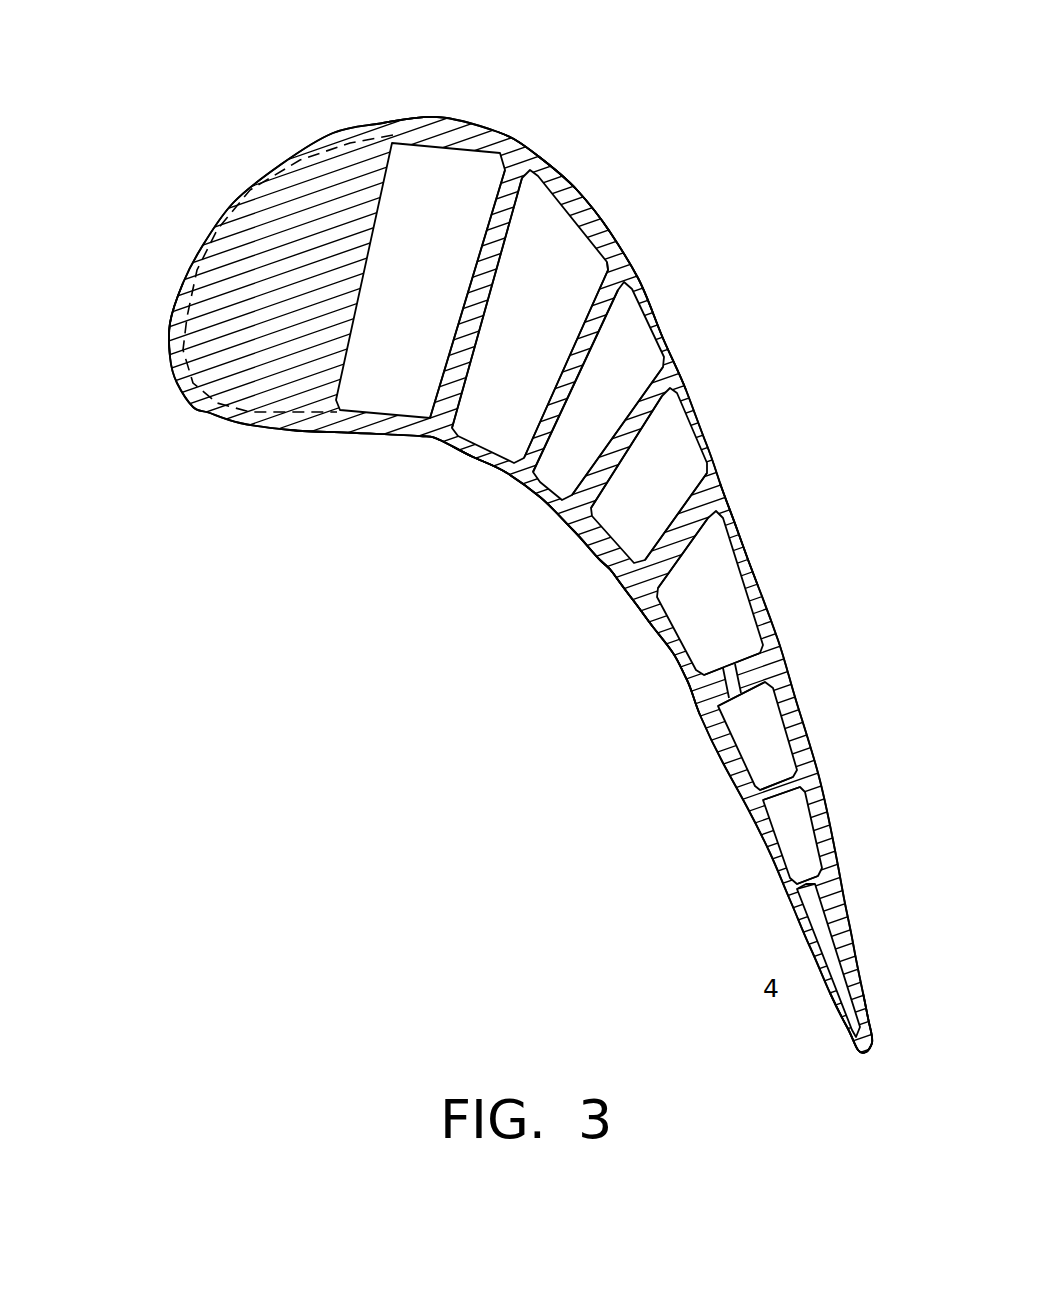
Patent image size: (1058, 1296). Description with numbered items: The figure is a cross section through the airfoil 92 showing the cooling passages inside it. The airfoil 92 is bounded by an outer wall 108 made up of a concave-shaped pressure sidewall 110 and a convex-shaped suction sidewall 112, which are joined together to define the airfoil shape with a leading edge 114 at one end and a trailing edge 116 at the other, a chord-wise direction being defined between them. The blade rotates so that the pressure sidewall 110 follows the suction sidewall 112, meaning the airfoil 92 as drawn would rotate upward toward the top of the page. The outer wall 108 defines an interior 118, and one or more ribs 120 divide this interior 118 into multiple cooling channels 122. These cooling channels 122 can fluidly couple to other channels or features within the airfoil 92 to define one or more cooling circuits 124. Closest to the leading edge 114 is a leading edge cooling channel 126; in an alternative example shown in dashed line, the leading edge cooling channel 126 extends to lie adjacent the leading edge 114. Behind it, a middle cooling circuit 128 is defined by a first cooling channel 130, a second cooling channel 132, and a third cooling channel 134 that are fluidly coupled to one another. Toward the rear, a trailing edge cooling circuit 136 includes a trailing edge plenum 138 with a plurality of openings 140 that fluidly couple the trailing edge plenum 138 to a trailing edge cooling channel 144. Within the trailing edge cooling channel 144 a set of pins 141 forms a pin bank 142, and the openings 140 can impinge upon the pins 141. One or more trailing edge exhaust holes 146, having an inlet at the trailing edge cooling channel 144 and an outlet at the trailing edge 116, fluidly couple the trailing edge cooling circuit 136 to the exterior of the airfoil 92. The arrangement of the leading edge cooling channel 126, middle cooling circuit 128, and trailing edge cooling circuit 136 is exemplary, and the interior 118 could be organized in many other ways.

The airfoil 92 is at (188, 203).
The outer wall 108 is at (437, 108).
The pressure sidewall 110 is at (527, 494).
The suction sidewall 112 is at (630, 255).
The leading edge 114 is at (185, 397).
The trailing edge 116 is at (862, 1052).
The interior 118 is at (573, 226).
The ribs 120 is at (490, 207).
The cooling channels 122 is at (372, 402).
The cooling circuits 124 is at (399, 160).
The leading edge cooling channel 126 is at (435, 287).
The middle cooling circuit 128 is at (482, 436).
The first cooling channel 130 is at (555, 347).
The second cooling channel 132 is at (625, 412).
The third cooling channel 134 is at (675, 495).
The trailing edge cooling circuit 136 is at (730, 555).
The trailing edge plenum 138 is at (732, 607).
The openings 140 is at (718, 700).
The pins 141 is at (790, 773).
The pin bank 142 is at (776, 795).
The trailing edge cooling channel 144 is at (805, 823).
The trailing edge exhaust holes 146 is at (853, 943).